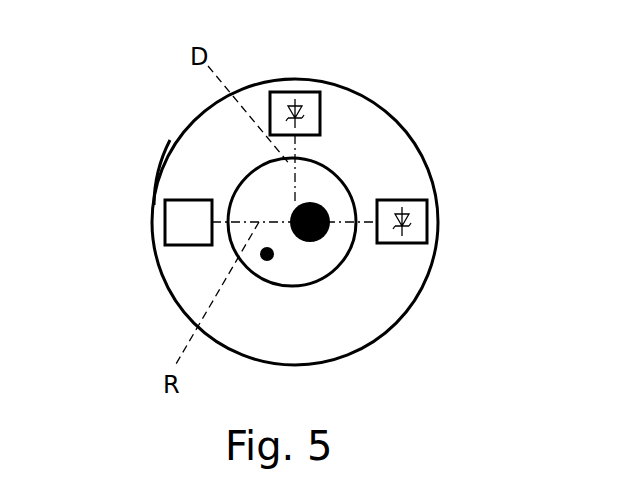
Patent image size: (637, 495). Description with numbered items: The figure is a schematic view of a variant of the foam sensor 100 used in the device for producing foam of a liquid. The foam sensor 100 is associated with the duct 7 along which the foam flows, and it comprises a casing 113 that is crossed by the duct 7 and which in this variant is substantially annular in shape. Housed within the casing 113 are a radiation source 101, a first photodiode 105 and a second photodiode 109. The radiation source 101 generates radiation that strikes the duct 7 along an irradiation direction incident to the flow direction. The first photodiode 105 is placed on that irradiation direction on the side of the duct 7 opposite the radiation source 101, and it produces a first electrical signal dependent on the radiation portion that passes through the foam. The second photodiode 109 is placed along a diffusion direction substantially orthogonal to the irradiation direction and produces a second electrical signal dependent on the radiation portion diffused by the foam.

The foam sensor 100 is at (168, 130).
The casing 113 is at (157, 182).
The duct 7 is at (355, 192).
The radiation source 101 is at (192, 247).
The second photodiode 109 is at (321, 112).
The first photodiode 105 is at (408, 247).